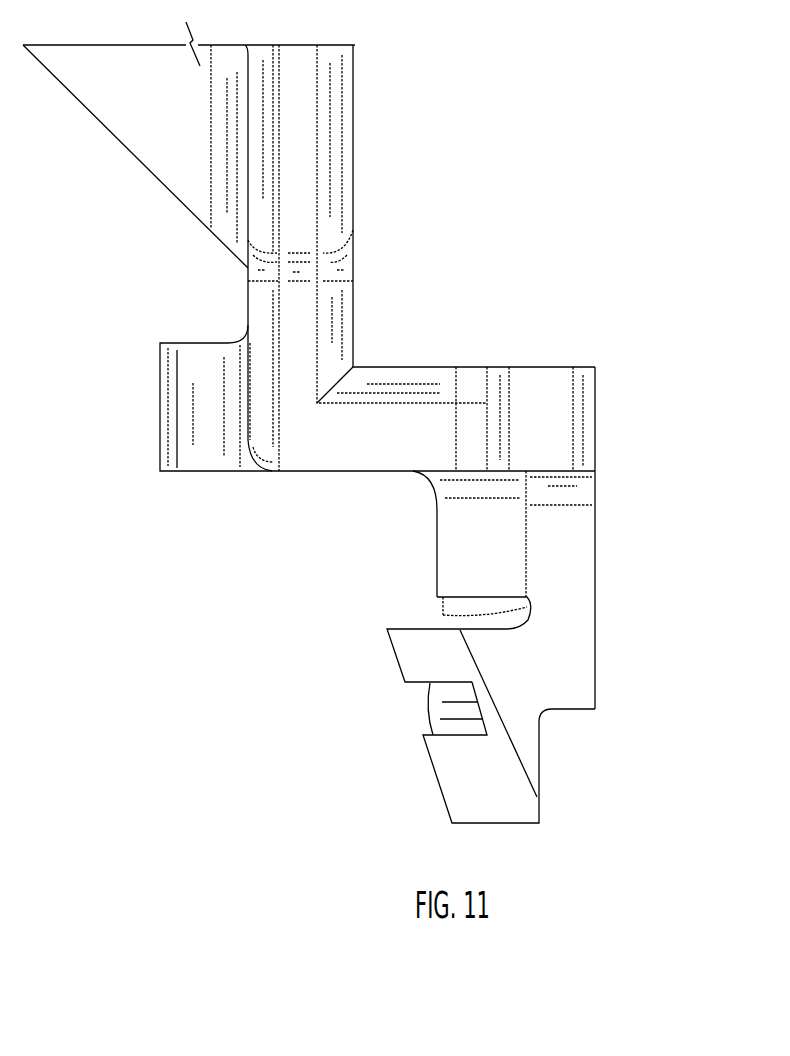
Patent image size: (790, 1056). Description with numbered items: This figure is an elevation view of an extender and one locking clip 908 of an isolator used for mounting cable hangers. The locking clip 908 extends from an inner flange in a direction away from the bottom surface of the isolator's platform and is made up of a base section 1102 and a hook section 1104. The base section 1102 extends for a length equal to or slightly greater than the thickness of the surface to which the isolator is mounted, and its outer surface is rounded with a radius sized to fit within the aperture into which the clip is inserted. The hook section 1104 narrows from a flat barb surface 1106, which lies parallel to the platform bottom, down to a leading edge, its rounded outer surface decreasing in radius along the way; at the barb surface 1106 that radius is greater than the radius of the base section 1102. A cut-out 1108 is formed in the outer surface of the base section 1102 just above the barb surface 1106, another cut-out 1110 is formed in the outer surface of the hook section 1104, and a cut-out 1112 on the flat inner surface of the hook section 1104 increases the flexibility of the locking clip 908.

The locking clip 908 is at (596, 484).
The base section 1102 is at (572, 546).
The hook section 1104 is at (532, 649).
The barb surface 1106 is at (405, 630).
The cut-out 1108 is at (452, 607).
The cut-out 1110 is at (442, 710).
The cut-out 1112 is at (543, 720).